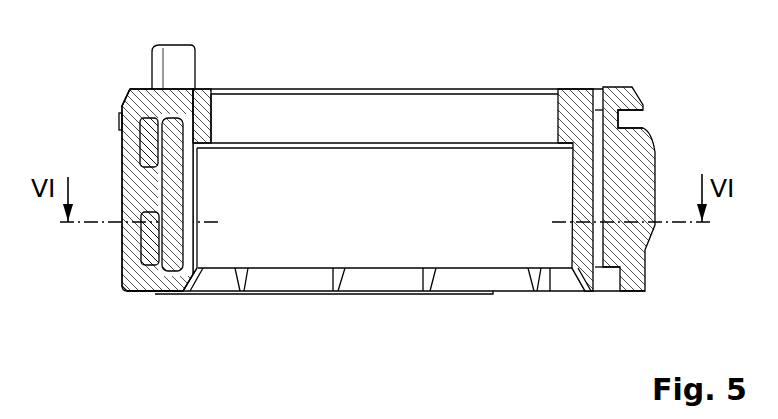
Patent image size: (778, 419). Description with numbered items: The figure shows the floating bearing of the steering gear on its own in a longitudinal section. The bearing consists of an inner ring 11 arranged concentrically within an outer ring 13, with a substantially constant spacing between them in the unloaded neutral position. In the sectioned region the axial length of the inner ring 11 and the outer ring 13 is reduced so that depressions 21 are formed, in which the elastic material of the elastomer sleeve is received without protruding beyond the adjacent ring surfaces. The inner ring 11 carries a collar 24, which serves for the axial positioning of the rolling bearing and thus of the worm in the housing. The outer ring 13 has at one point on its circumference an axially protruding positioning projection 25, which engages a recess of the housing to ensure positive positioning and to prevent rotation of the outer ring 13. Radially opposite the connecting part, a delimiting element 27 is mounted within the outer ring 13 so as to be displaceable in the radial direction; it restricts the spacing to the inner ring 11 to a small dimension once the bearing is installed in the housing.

The inner ring 11 is at (167, 183).
The outer ring 13 is at (148, 138).
The depression 21 is at (158, 107).
The collar 24 is at (414, 108).
The positioning projection 25 is at (188, 70).
The delimiting element 27 is at (642, 150).